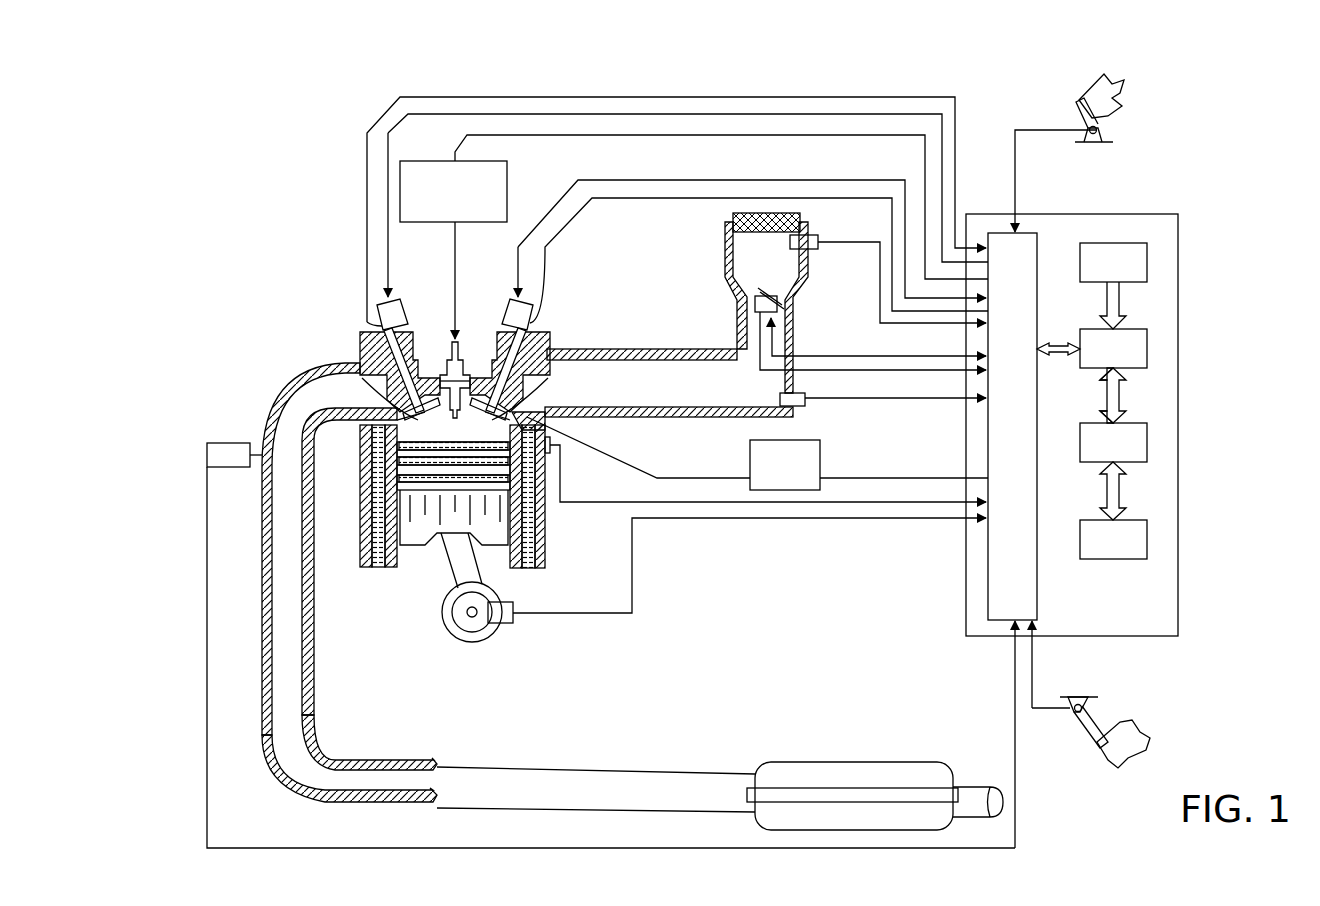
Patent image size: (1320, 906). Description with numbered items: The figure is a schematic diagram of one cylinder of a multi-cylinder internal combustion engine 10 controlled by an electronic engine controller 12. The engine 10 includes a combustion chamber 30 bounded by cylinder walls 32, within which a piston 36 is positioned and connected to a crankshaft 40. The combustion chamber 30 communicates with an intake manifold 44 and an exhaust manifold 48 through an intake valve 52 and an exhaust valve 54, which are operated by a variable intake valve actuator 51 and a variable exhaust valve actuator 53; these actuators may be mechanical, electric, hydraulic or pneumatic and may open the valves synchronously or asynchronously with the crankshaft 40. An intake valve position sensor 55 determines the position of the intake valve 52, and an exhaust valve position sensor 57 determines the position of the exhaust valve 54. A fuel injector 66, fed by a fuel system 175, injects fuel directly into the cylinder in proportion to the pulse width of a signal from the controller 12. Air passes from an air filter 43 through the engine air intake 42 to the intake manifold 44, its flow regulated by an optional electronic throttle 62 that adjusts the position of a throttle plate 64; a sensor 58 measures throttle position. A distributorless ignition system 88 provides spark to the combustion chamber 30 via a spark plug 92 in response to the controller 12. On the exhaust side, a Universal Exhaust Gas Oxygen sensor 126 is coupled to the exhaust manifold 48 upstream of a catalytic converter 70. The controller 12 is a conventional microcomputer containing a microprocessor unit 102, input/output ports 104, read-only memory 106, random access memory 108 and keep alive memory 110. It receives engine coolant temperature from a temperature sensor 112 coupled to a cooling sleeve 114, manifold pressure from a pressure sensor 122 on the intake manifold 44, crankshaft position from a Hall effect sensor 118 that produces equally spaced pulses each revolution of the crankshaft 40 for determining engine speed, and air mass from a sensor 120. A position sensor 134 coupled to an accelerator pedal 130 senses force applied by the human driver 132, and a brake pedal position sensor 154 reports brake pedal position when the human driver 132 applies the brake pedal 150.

The internal combustion engine 10 is at (298, 288).
The electronic engine controller 12 is at (1172, 214).
The combustion chamber 30 is at (452, 427).
The cylinder walls 32 is at (397, 558).
The piston 36 is at (437, 518).
The crankshaft 40 is at (470, 638).
The air intake 42 is at (732, 303).
The air filter 43 is at (735, 215).
The intake manifold 44 is at (630, 392).
The exhaust manifold 48 is at (342, 401).
The variable intake valve actuator 51 is at (515, 305).
The intake valve 52 is at (498, 393).
The variable exhaust valve actuator 53 is at (395, 306).
The exhaust valve 54 is at (395, 410).
The intake valve position sensor 55 is at (530, 324).
The exhaust valve position sensor 57 is at (380, 325).
The throttle position sensor 58 is at (758, 312).
The electronic throttle 62 is at (770, 295).
The throttle plate 64 is at (755, 298).
The fuel injector 66 is at (533, 425).
The catalytic converter 70 is at (790, 762).
The distributorless ignition system 88 is at (413, 161).
The spark plug 92 is at (460, 345).
The microprocessor unit 102 is at (1147, 351).
The input/output ports 104 is at (1037, 243).
The read-only memory 106 is at (1147, 262).
The random access memory 108 is at (1147, 443).
The keep alive memory 110 is at (1147, 538).
The temperature sensor 112 is at (560, 457).
The cooling sleeve 114 is at (540, 523).
The Hall effect sensor 118 is at (512, 604).
The air mass sensor 120 is at (806, 235).
The pressure sensor 122 is at (800, 406).
The Universal Exhaust Gas Oxygen sensor 126 is at (210, 445).
The accelerator pedal 130 is at (1115, 108).
The human driver 132 is at (1118, 86).
The position sensor 134 is at (1100, 130).
The brake pedal 150 is at (1093, 722).
The brake pedal position sensor 154 is at (1070, 706).
The fuel system 175 is at (806, 474).